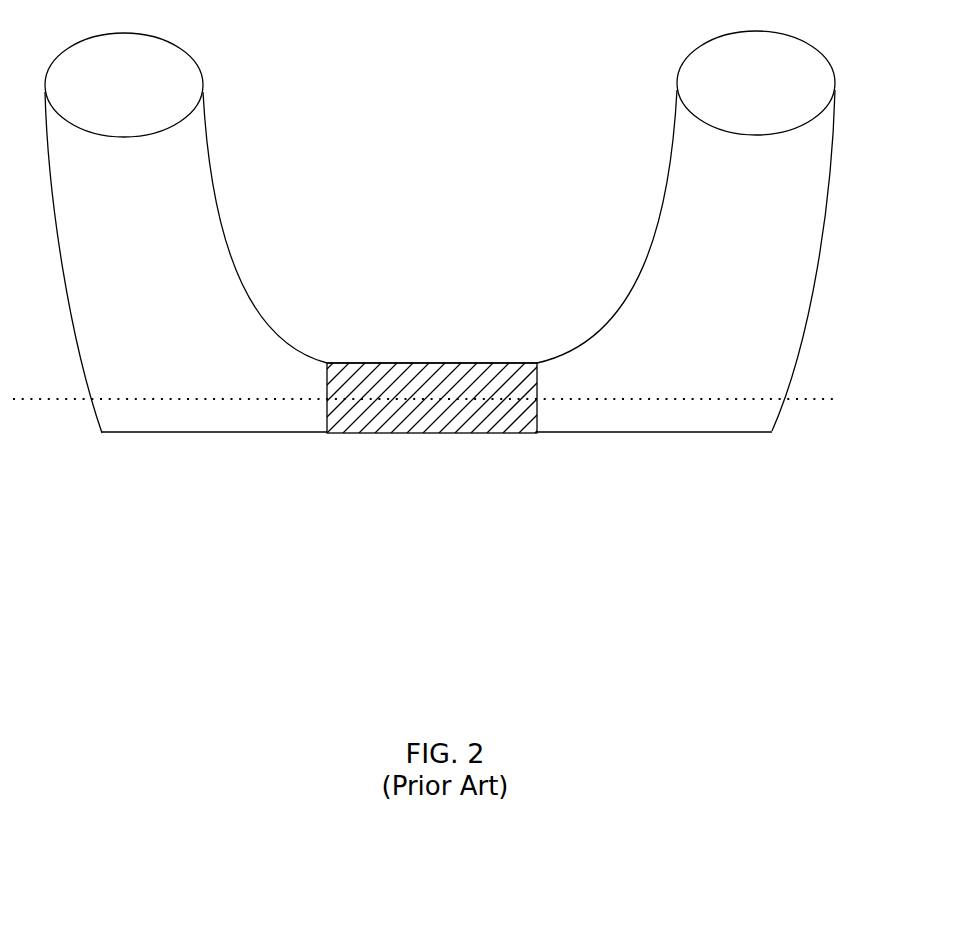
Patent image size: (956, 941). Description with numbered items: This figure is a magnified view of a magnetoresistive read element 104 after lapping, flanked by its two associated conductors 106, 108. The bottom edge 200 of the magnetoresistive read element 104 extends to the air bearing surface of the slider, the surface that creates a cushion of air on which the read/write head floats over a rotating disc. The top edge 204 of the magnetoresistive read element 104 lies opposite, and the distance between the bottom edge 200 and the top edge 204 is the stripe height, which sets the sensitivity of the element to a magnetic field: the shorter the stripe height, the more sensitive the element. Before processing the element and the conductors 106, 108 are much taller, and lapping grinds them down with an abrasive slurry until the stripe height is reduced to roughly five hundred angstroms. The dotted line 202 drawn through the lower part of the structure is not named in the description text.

The magnetoresistive read element 104 is at (513, 380).
The conductor 106 is at (122, 283).
The conductor 108 is at (752, 276).
The bottom edge 200 is at (415, 433).
The reference plane 202 is at (820, 397).
The top edge 204 is at (430, 362).